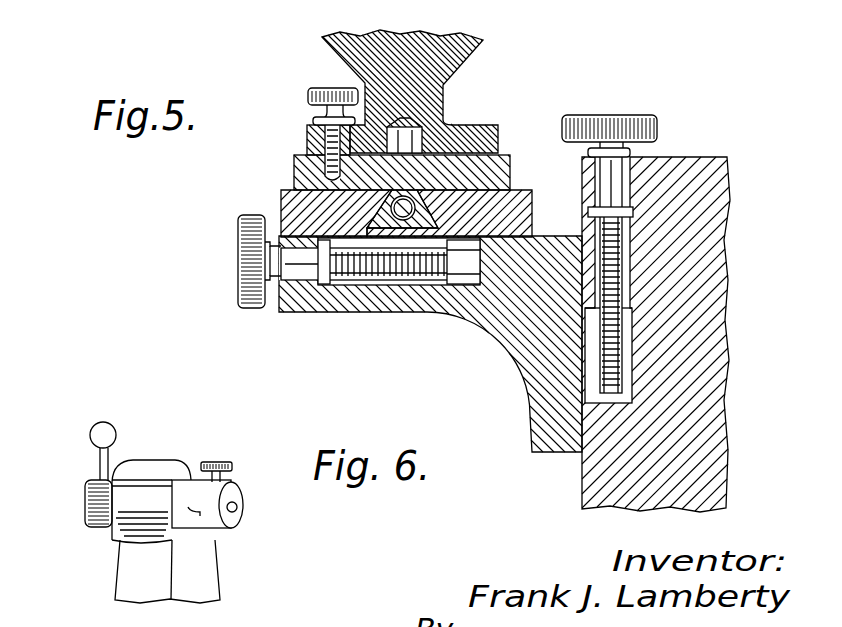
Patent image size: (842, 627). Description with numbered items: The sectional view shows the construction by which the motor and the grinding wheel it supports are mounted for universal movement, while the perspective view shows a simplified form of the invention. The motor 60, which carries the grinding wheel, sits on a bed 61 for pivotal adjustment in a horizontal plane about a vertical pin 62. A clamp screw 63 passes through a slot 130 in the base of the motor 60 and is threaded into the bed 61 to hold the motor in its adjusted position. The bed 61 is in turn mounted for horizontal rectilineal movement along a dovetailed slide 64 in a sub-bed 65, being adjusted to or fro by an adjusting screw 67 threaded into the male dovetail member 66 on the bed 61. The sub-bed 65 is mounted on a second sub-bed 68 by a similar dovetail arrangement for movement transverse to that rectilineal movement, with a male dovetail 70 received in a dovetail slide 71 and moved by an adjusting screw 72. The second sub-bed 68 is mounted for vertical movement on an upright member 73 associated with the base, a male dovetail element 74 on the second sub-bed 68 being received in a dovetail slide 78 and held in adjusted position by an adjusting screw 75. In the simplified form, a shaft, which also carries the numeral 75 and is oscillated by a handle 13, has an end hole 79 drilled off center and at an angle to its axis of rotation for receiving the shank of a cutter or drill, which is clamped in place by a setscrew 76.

In FIG. 5, the motor 60 is at (470, 55).
In FIG. 5, the bed 61 is at (503, 168).
In FIG. 5, the vertical pin 62 is at (435, 127).
In FIG. 5, the clamp screw 63 is at (308, 97).
In FIG. 5, the slot 130 is at (308, 135).
In FIG. 5, the dovetailed slide 64 is at (532, 200).
In FIG. 5, the sub-bed 65 is at (288, 223).
In FIG. 5, the male dovetail member 66 is at (388, 204).
In FIG. 5, the adjusting screw 67 is at (282, 190).
In FIG. 5, the second sub-bed 68 is at (412, 303).
In FIG. 5, the male dovetail 70 is at (375, 282).
In FIG. 5, the dovetail slide 71 is at (458, 282).
In FIG. 5, the adjusting screw 72 is at (238, 278).
In FIG. 5, the upright member 73 is at (702, 385).
In FIG. 5, the male dovetail element 74 is at (632, 257).
In FIG. 5, the adjusting screw 75 is at (603, 127).
In FIG. 6, the adjusting screw 75 is at (88, 500).
In FIG. 5, the dovetail slide 78 is at (628, 337).
In FIG. 6, the handle 13 is at (108, 427).
In FIG. 6, the setscrew 76 is at (220, 462).
In FIG. 6, the end hole 79 is at (235, 508).